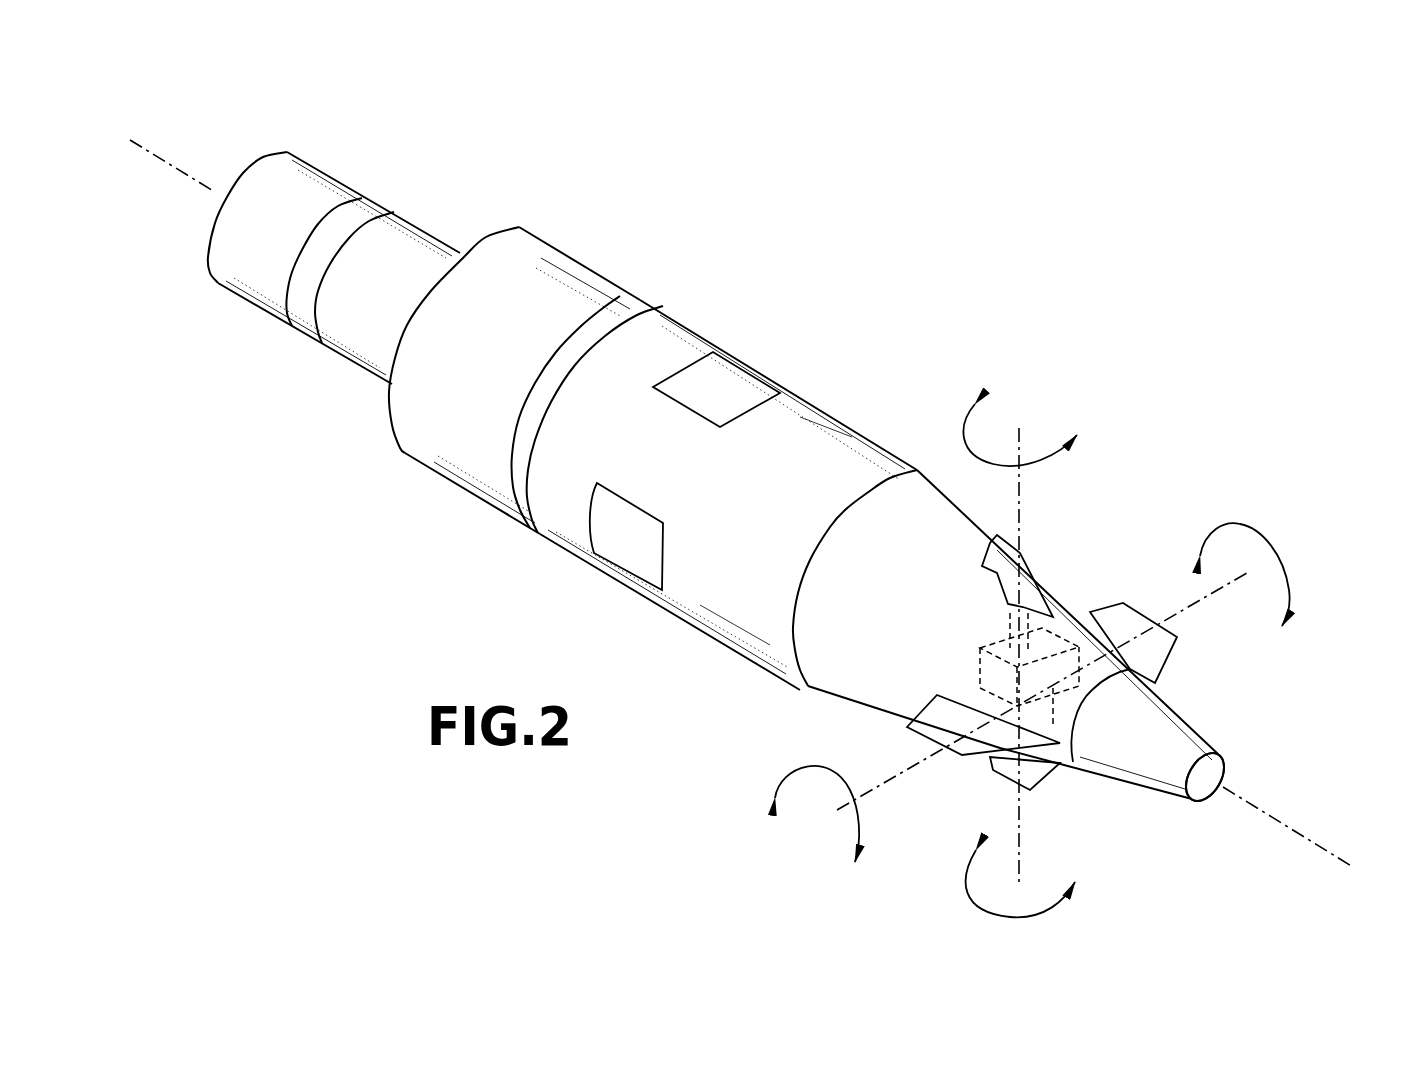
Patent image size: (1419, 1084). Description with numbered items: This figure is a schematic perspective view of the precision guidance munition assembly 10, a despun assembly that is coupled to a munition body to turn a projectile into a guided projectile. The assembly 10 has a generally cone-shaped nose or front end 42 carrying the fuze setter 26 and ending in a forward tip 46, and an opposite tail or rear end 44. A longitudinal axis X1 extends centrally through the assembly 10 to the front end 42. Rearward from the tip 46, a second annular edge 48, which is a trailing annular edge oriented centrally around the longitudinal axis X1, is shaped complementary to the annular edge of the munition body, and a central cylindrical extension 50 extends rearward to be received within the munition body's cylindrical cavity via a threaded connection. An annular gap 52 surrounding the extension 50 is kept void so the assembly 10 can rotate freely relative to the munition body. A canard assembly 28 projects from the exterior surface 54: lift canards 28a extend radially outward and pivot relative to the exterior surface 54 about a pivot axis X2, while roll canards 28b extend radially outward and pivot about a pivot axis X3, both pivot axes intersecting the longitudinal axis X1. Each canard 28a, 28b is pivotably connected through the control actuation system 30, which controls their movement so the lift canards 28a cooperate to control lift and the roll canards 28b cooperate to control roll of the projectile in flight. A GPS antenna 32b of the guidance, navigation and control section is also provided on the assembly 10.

The precision guidance munition assembly 10 is at (928, 346).
The fuze setter 26 is at (1202, 718).
The canard assembly 28 is at (1084, 708).
The lift canard 28a is at (1131, 626).
The roll canard 28b is at (990, 572).
The control actuation system 30 is at (981, 645).
The GPS antenna 32b is at (733, 380).
The front end 42 is at (1224, 806).
The rear end 44 is at (224, 167).
The forward tip 46 is at (1213, 768).
The second annular edge 48 is at (545, 387).
The central cylindrical extension 50 is at (336, 361).
The gap 52 is at (612, 312).
The exterior surface 54 is at (745, 502).
The longitudinal axis X1 is at (185, 172).
The pivot axis X2 is at (1200, 603).
The pivot axis X3 is at (1022, 492).